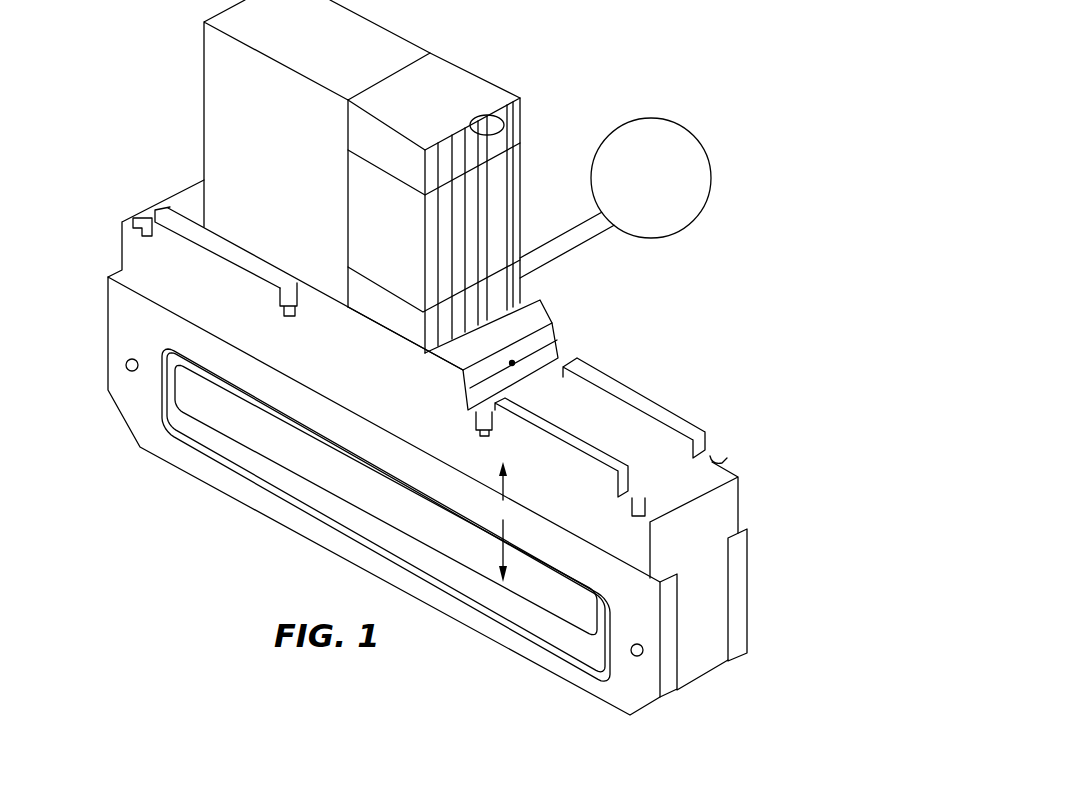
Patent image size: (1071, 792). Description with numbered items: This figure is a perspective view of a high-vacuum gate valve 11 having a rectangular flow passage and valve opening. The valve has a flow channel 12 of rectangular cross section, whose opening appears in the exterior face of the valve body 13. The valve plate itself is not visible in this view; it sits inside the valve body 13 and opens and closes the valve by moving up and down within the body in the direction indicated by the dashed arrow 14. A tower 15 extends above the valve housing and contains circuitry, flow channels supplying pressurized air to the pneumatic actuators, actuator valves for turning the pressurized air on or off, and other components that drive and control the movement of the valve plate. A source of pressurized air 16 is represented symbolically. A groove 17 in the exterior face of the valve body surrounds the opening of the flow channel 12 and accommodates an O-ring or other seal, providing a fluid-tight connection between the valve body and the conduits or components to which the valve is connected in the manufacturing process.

The gate valve 11 is at (72, 117).
The flow channel 12 is at (210, 408).
The valve body 13 is at (108, 305).
The dashed arrow 14 is at (512, 500).
The tower 15 is at (478, 74).
The source of pressurized air 16 is at (687, 130).
The groove 17 is at (120, 339).